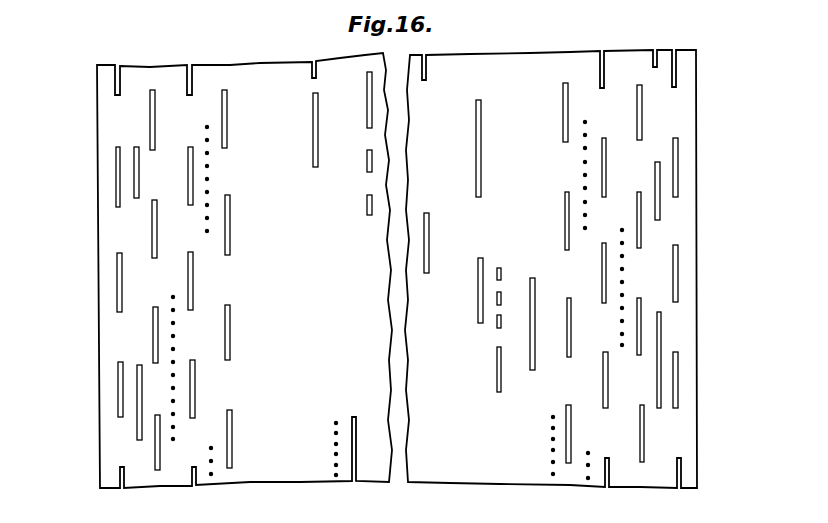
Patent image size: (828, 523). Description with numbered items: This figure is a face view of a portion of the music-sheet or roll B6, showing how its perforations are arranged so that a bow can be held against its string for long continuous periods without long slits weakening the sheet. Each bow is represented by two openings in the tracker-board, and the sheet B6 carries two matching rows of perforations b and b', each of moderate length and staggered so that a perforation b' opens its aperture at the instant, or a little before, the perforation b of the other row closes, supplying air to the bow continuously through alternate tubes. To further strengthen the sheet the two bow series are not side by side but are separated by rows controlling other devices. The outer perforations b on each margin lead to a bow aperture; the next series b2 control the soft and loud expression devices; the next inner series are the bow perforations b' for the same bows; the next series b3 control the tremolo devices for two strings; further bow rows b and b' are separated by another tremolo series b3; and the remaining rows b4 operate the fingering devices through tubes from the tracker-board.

The perforation b is at (397, 276).
The perforation b' is at (396, 276).
The perforation b2 is at (139, 366).
The perforation b3 is at (209, 179).
The perforation b4 is at (313, 135).
The music-sheet B6 is at (712, 436).